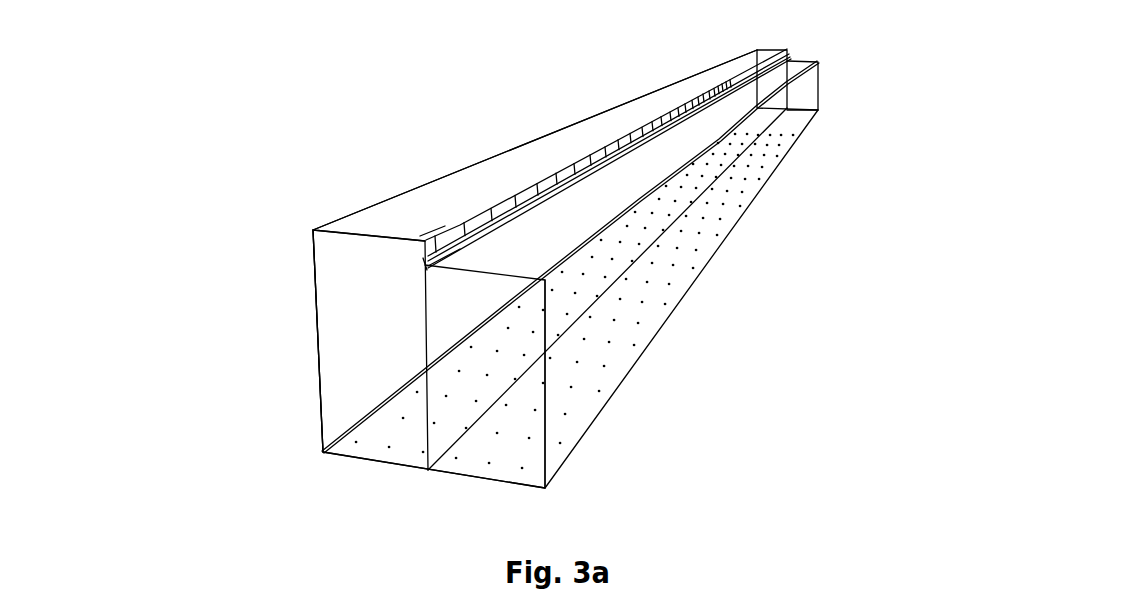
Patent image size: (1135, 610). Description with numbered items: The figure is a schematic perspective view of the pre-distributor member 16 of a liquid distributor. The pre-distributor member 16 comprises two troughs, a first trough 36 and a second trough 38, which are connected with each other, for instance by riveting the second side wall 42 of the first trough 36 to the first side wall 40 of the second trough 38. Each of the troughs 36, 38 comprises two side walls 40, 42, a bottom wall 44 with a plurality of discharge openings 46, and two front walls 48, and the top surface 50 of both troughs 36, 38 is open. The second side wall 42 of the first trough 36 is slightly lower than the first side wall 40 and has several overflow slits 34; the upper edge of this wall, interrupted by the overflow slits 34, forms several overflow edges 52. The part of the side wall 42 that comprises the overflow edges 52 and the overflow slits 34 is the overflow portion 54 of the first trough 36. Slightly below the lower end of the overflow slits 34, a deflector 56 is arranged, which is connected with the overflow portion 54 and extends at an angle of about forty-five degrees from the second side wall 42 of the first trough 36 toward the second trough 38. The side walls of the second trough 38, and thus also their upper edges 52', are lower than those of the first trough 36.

The pre-distributor member 16 is at (192, 333).
The overflow slits 34 is at (530, 197).
The first trough 36 is at (345, 252).
The second trough 38 is at (534, 455).
The first side wall 40 is at (313, 277).
The second side wall 42 is at (419, 400).
The bottom wall 44 is at (324, 453).
The discharge openings 46 is at (390, 447).
The front walls 48 is at (349, 374).
The top surface 50 is at (450, 202).
The overflow edges 52 is at (583, 137).
The upper edges of the side walls of the second trough 52' is at (857, 79).
The overflow portion 54 is at (423, 264).
The deflector 56 is at (426, 266).